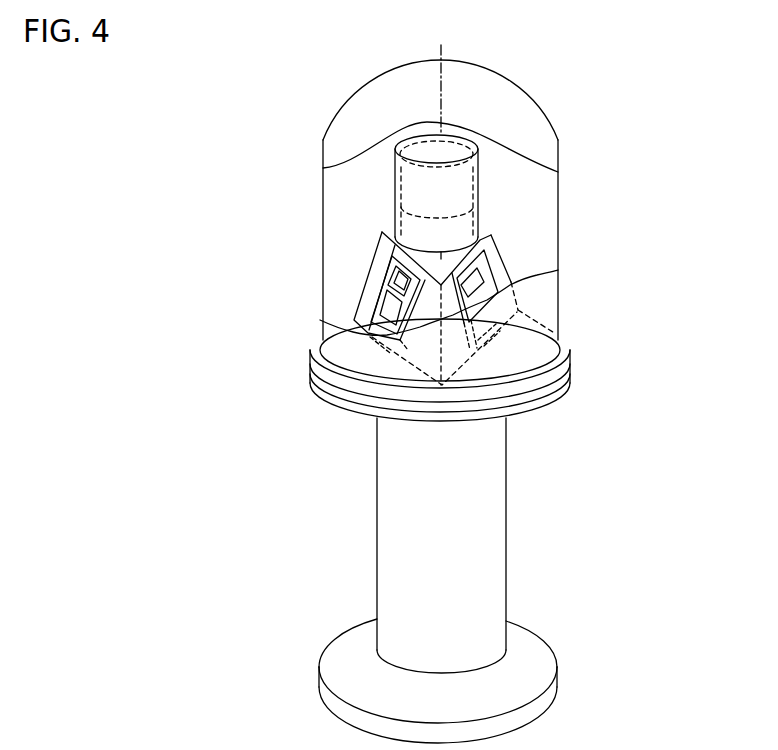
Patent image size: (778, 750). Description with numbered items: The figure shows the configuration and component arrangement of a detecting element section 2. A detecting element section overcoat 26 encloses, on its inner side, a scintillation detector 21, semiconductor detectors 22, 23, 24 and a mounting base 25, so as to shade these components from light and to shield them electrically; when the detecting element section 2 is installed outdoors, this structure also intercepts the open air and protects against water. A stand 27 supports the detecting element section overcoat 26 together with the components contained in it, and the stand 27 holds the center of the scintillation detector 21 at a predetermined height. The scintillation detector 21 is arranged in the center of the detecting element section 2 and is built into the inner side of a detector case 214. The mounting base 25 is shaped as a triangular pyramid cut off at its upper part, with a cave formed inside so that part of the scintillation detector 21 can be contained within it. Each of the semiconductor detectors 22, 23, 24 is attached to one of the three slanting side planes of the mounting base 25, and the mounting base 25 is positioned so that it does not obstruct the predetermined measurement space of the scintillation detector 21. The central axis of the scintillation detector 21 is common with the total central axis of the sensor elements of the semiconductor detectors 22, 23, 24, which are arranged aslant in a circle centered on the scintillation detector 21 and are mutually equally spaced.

The detecting element section 2 is at (745, 61).
The scintillation detector 21 is at (405, 185).
The detector case 214 is at (481, 198).
The semiconductor detector 22 is at (493, 245).
The semiconductor detector 23 is at (380, 283).
The semiconductor detector 24 is at (392, 231).
The mounting base 25 is at (507, 330).
The detecting element section overcoat 26 is at (530, 98).
The stand 27 is at (506, 528).